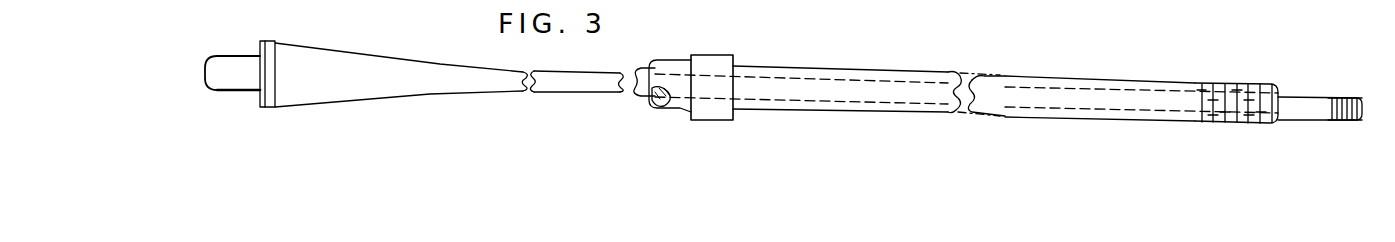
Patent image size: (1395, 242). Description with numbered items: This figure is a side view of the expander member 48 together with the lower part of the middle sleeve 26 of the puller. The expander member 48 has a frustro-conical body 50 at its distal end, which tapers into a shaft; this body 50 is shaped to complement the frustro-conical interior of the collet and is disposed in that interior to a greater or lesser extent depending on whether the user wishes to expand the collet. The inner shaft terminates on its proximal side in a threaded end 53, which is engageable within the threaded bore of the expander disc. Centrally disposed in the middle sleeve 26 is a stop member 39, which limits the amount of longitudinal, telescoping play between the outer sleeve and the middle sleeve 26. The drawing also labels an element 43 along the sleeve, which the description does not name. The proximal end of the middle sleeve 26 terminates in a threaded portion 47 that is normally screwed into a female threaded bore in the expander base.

The middle sleeve 26 is at (763, 65).
The stop member 39 is at (717, 63).
The inner rod 43 is at (885, 70).
The threaded portion 47 is at (1232, 83).
The expander member 48 is at (375, 53).
The frustro-conical body 50 is at (312, 83).
The threaded end 53 is at (1342, 97).